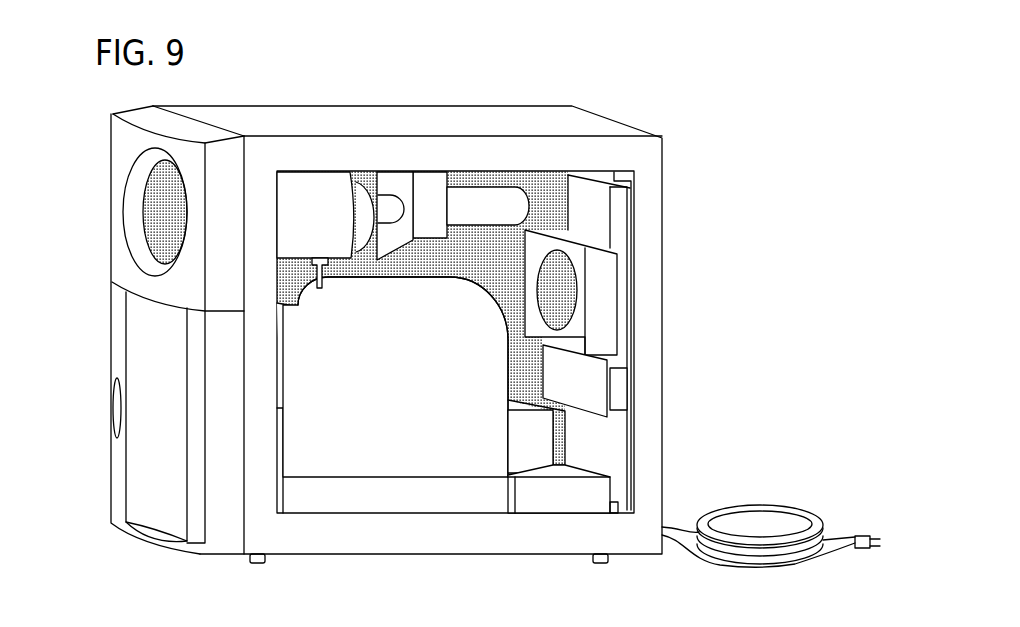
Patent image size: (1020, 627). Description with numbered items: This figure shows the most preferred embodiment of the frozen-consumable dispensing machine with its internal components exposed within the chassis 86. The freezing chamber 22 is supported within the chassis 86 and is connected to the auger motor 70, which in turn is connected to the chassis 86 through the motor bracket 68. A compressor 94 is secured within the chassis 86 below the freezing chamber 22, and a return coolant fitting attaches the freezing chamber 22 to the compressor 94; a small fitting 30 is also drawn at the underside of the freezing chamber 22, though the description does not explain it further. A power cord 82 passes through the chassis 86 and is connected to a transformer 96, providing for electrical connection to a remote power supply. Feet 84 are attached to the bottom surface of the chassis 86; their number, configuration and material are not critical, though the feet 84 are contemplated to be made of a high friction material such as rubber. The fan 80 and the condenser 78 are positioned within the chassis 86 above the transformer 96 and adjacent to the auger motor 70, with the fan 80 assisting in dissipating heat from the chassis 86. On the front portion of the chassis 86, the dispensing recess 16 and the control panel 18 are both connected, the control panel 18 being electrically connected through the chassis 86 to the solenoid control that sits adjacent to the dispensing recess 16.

The dispensing recess 16 is at (148, 481).
The control panel 18 is at (115, 405).
The freezing chamber 22 is at (312, 190).
The nozzle 30 is at (335, 270).
The motor bracket 68 is at (392, 248).
The auger motor 70 is at (490, 200).
The condenser 78 is at (623, 385).
The fan 80 is at (603, 301).
The power cord 82 is at (758, 508).
The feet 84 is at (257, 565).
The chassis 86 is at (598, 152).
The compressor 94 is at (397, 492).
The transformer 96 is at (557, 497).